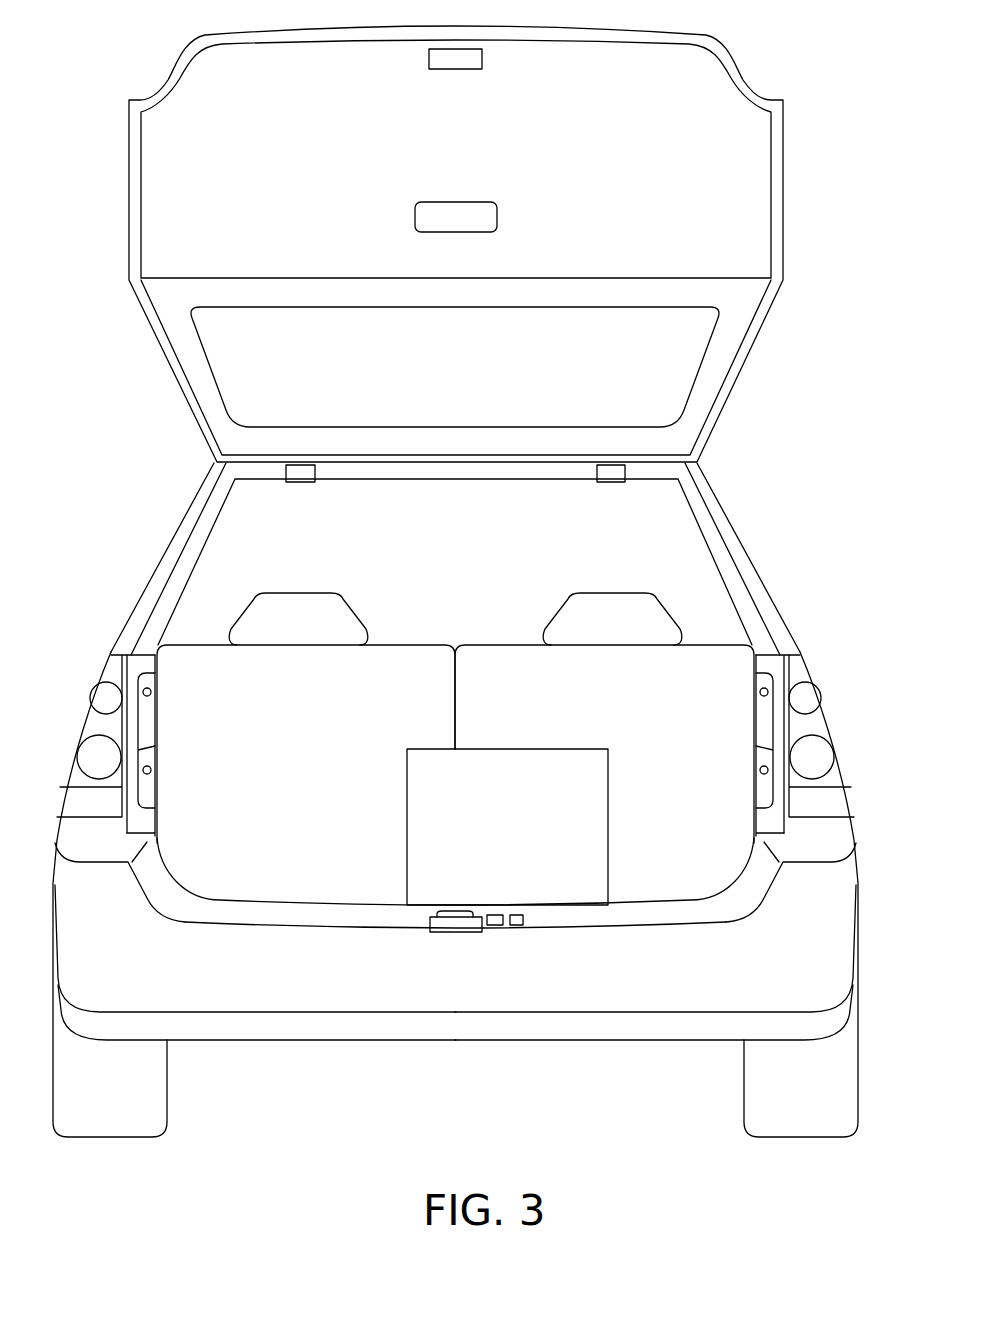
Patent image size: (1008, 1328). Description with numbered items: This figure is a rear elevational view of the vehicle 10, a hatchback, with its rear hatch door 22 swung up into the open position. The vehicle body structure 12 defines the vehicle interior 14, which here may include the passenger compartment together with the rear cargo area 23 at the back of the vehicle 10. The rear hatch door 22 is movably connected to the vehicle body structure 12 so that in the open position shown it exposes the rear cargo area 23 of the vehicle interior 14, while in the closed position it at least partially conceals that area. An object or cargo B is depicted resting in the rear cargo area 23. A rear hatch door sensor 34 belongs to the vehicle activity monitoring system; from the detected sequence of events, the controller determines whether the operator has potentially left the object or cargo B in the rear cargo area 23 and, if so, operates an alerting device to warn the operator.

The vehicle 10 is at (770, 498).
The vehicle body structure 12 is at (777, 593).
The vehicle interior 14 is at (268, 536).
The rear hatch door 22 is at (783, 186).
The rear cargo area 23 is at (278, 842).
The rear hatch door sensor 34 is at (514, 928).
The object or cargo B is at (447, 817).